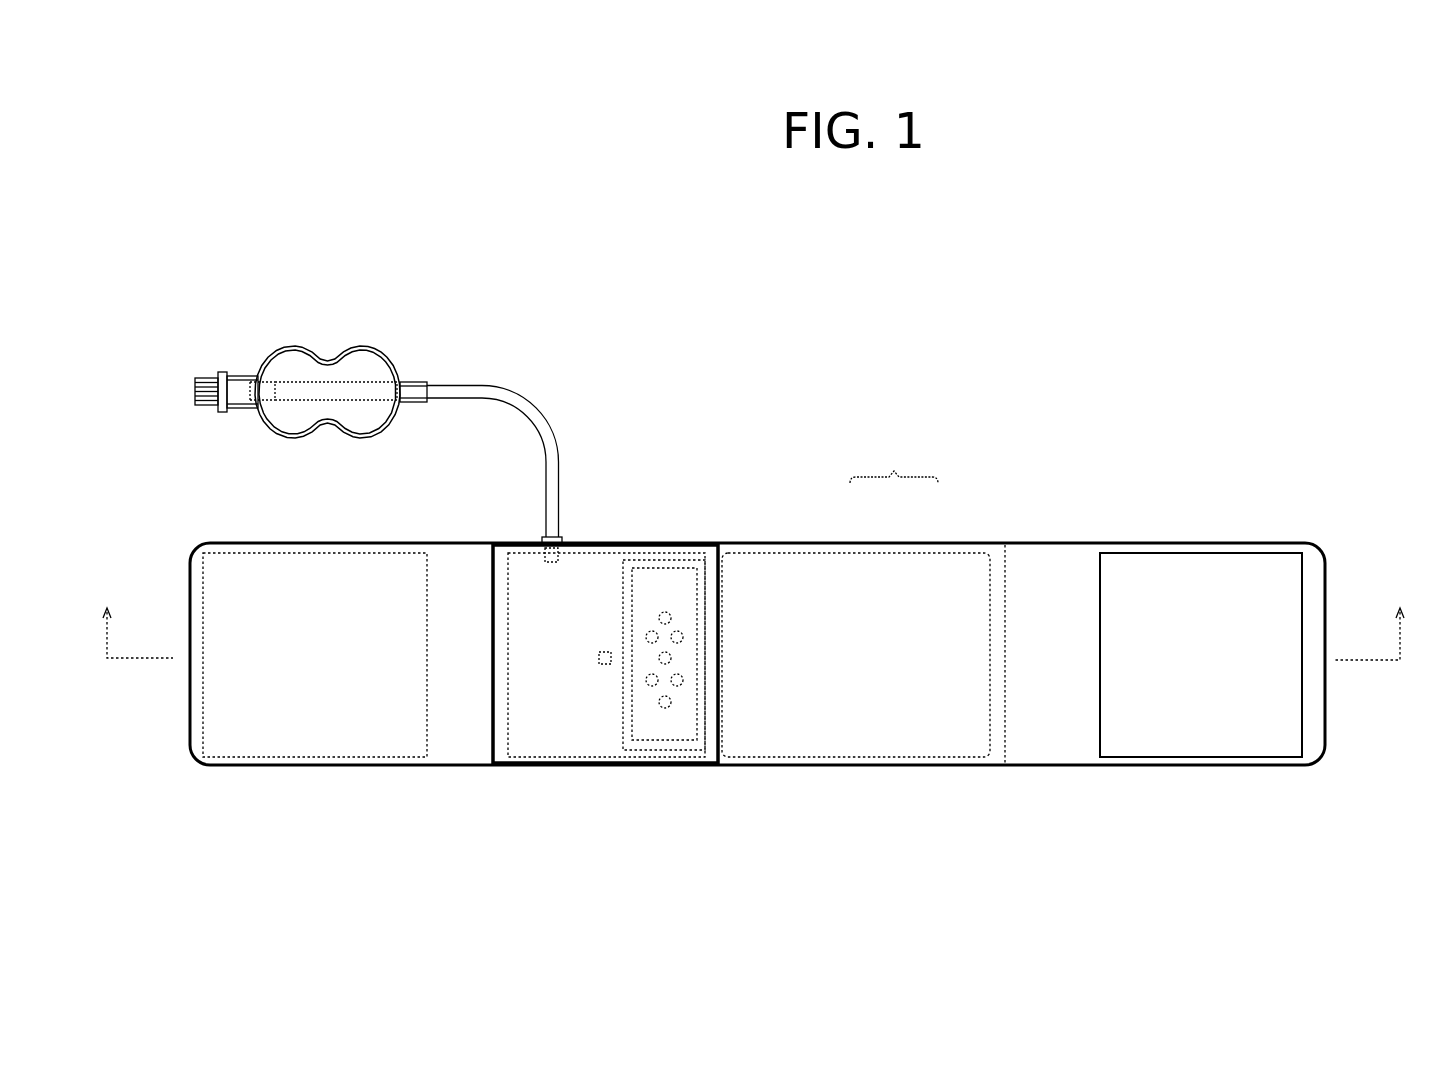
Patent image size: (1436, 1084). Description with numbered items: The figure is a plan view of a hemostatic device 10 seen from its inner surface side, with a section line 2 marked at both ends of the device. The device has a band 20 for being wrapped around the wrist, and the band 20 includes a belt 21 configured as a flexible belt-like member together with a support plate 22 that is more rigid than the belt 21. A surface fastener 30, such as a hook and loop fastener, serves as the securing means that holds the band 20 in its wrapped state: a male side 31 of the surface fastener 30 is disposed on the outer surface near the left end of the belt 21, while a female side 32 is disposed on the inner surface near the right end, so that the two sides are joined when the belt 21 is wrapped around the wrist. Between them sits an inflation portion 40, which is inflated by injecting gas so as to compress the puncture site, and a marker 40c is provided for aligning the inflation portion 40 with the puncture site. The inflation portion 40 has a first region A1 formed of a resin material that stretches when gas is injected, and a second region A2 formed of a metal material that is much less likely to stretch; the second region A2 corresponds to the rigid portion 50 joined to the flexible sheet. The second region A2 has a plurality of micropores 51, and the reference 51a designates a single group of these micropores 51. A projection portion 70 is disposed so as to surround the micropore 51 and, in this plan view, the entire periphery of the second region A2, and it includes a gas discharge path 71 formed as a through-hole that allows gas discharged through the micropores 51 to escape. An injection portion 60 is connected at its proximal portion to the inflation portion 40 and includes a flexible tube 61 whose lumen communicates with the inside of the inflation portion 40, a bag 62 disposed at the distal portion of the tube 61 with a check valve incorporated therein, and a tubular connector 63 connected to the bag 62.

The hemostatic device 10 is at (157, 183).
The section line 2 is at (754, 613).
The band 20 is at (894, 459).
The belt 21 is at (855, 543).
The support plate 22 is at (902, 553).
The surface fastener 30 is at (243, 757).
The male side 31 is at (308, 757).
The female side 32 is at (1207, 757).
The inflation portion 40 is at (725, 747).
The marker 40c is at (605, 650).
The rigid portion 50 is at (643, 723).
The micropore 51 is at (695, 560).
The group of micropores 51a is at (670, 600).
The injection portion 60 is at (287, 333).
The tube 61 is at (478, 385).
The bag 62 is at (378, 358).
The tubular connector 63 is at (199, 374).
The projection portion 70 is at (705, 680).
The gas discharge path 71 is at (705, 657).
The first region A1 is at (538, 723).
The second region A2 is at (662, 848).